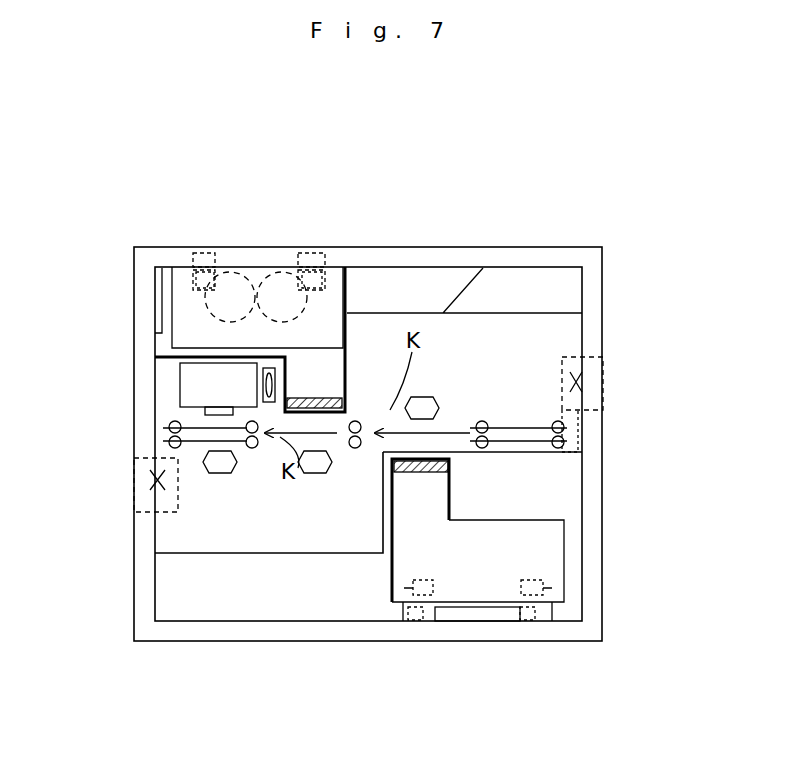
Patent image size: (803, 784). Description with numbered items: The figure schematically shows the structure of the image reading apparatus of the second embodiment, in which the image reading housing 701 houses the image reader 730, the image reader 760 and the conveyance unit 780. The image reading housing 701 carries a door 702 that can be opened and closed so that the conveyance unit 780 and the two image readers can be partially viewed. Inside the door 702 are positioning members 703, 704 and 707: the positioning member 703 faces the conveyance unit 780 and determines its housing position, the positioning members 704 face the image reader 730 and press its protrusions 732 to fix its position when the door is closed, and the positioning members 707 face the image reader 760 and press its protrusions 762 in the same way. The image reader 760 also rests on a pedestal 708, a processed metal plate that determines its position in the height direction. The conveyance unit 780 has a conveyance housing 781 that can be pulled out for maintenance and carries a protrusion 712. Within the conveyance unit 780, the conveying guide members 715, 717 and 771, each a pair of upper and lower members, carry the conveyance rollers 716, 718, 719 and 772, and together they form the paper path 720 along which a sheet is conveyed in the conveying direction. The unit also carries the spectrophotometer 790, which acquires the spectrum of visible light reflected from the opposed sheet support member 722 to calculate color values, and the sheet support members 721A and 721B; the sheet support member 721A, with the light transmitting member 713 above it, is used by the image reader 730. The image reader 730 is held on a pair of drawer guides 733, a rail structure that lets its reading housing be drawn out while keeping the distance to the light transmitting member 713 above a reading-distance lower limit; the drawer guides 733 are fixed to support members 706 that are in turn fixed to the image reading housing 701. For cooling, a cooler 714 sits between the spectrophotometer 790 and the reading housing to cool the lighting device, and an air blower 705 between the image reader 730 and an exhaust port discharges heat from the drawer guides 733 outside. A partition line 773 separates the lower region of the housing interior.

The image reading housing 701 is at (570, 252).
The door 702 is at (262, 585).
The positioning member 703 is at (148, 476).
The positioning members 704 is at (205, 255).
The air blower 705 is at (235, 283).
The support members 706 is at (163, 297).
The positioning members 707 is at (424, 622).
The pedestal 708 is at (496, 622).
The protrusion 712 is at (572, 388).
The light transmitting member 713 is at (314, 397).
The cooler 714 is at (263, 383).
The conveying guide member 715 is at (372, 423).
The conveyance roller 716 is at (360, 450).
The conveying guide member 717 is at (268, 442).
The conveyance rollers 718 is at (253, 450).
The conveyance rollers 719 is at (175, 450).
The paper path 720 is at (200, 432).
The sheet support member 721A is at (315, 475).
The sheet support member 721B is at (425, 397).
The sheet support member 722 is at (218, 475).
The image reader 730 is at (194, 308).
The protrusions 732 is at (195, 247).
The drawer guide 733 is at (203, 255).
The image reader 760 is at (542, 542).
The protrusions 762 is at (545, 591).
The conveying guide member 771 is at (556, 422).
The conveyance roller 772 is at (567, 441).
The partition wall 773 is at (447, 452).
The conveyance unit 780 is at (564, 331).
The conveyance housing 781 is at (465, 310).
The spectrophotometer 790 is at (192, 387).